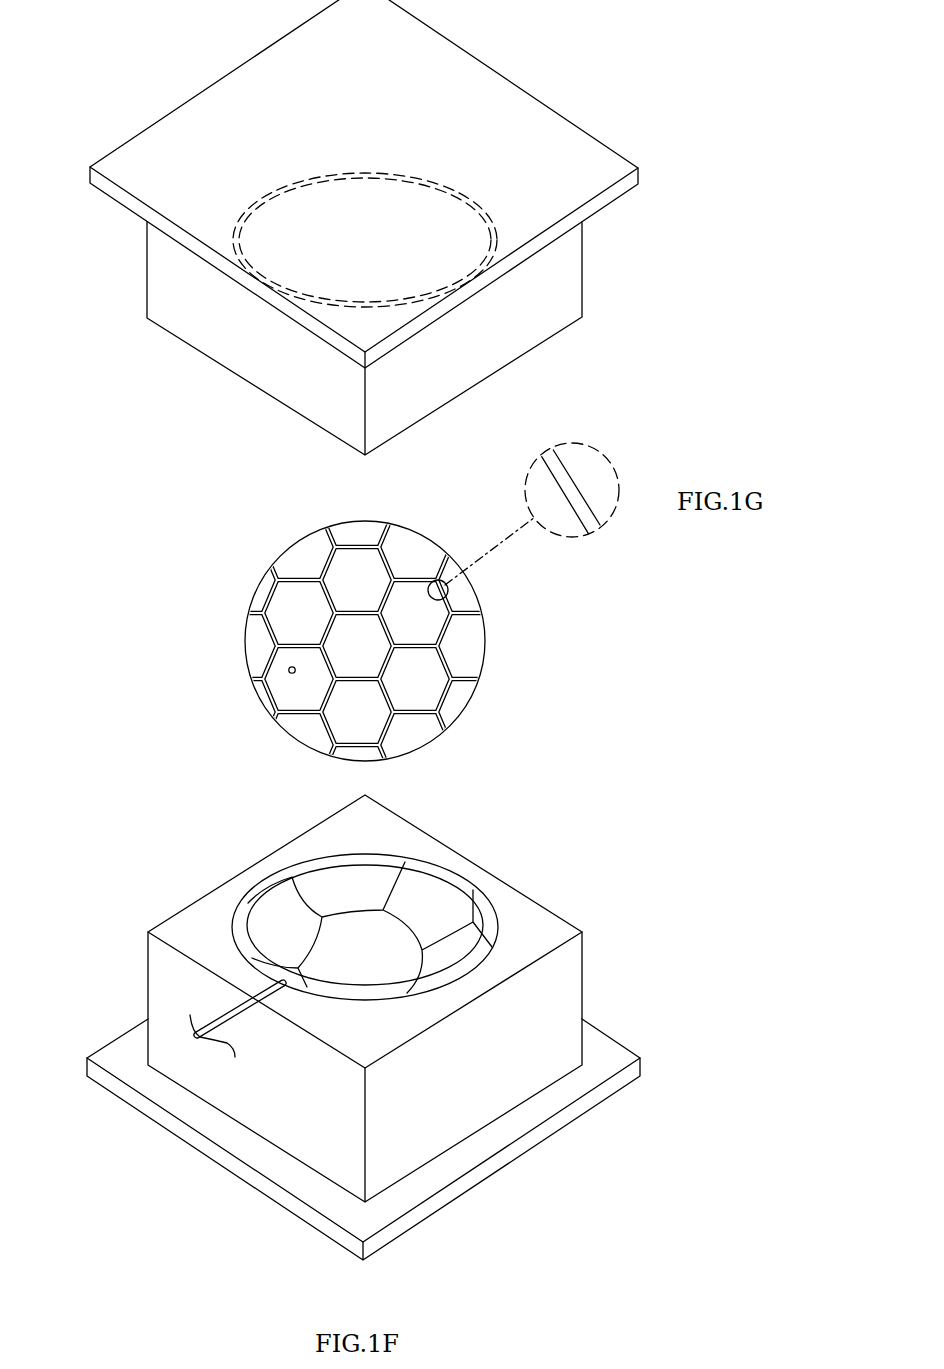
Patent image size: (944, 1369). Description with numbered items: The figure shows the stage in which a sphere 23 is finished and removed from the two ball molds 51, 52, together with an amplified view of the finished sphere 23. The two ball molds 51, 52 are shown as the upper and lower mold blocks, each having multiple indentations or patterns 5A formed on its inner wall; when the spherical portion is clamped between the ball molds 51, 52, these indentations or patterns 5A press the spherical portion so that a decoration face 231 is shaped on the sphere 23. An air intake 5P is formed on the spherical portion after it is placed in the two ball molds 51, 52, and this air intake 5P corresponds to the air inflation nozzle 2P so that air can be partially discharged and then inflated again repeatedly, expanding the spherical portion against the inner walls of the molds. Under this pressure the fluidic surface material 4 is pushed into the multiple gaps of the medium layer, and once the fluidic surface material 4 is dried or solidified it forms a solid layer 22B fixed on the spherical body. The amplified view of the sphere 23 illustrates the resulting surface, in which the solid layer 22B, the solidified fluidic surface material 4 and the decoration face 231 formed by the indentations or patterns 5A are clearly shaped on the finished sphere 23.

In FIG. 1F, the indentations or patterns 5A is at (287, 188).
In FIG. 1F, the ball mold 51 is at (192, 290).
In FIG. 1F, the ball mold 52 is at (178, 988).
In FIG. 1F, the air intake 5P is at (277, 982).
In FIG. 1F, the sphere 23 is at (267, 557).
In FIG. 1F, the solid layer 22B is at (470, 640).
In FIG. 1F, the decoration face 231 is at (440, 640).
In FIG. 1G, the decoration face 231 is at (572, 492).
In FIG. 1F, the fluidic surface material 4 is at (447, 586).
In FIG. 1G, the fluidic surface material 4 is at (597, 463).
In FIG. 1F, the air inflation nozzle 2P is at (292, 673).